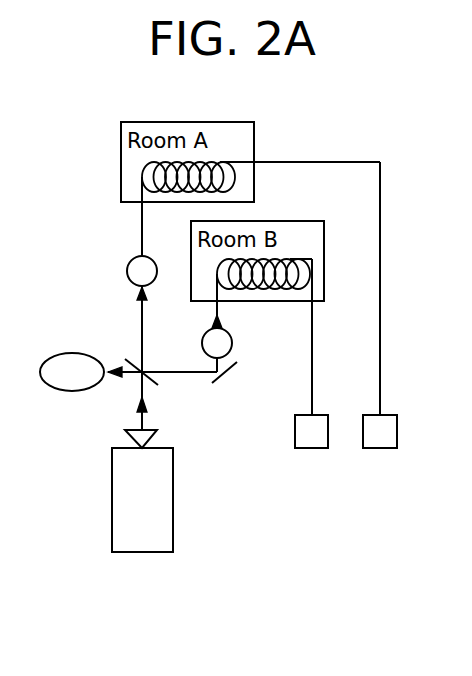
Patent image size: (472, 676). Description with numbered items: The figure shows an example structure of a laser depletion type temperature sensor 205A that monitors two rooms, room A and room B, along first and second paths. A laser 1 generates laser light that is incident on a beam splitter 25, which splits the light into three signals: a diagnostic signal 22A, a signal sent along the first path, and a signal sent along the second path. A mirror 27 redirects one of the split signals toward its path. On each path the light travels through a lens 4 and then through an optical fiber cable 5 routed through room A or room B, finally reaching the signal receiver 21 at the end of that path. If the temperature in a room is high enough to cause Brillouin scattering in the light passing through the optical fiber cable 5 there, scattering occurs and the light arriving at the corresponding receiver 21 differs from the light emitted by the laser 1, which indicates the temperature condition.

The laser depletion type temperature sensor 205A is at (178, 104).
The optical fiber cable 5 is at (216, 162).
The lens 4 is at (150, 283).
The diagnostic signal 22A is at (91, 384).
The beam splitter 25 is at (148, 379).
The mirror 27 is at (232, 370).
The laser 1 is at (149, 515).
The signal receiver 21 is at (373, 449).